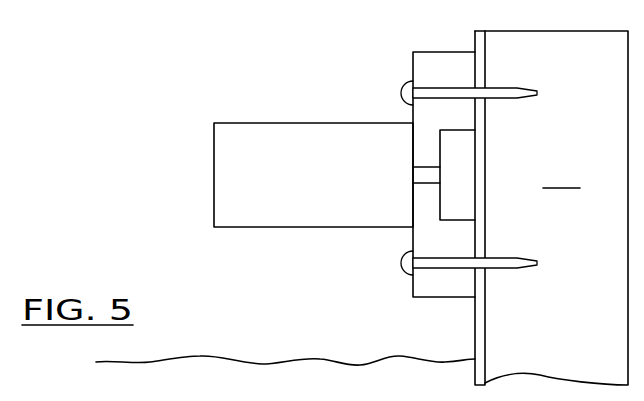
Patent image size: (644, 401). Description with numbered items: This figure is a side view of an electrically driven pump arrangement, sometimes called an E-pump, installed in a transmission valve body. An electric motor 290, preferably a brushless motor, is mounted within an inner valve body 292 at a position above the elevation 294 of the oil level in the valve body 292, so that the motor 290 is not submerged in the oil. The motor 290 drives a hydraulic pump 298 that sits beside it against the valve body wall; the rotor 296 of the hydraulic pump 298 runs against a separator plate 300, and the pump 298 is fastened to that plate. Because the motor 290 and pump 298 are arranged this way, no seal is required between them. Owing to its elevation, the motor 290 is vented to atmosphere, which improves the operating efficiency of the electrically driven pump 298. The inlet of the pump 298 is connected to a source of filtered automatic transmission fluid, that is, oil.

The electric motor 290 is at (269, 210).
The inner valve body 292 is at (551, 208).
The elevation of the oil level 294 is at (212, 353).
The rotor 296 is at (453, 197).
The hydraulic pump 298 is at (413, 68).
The separator plate 300 is at (475, 42).